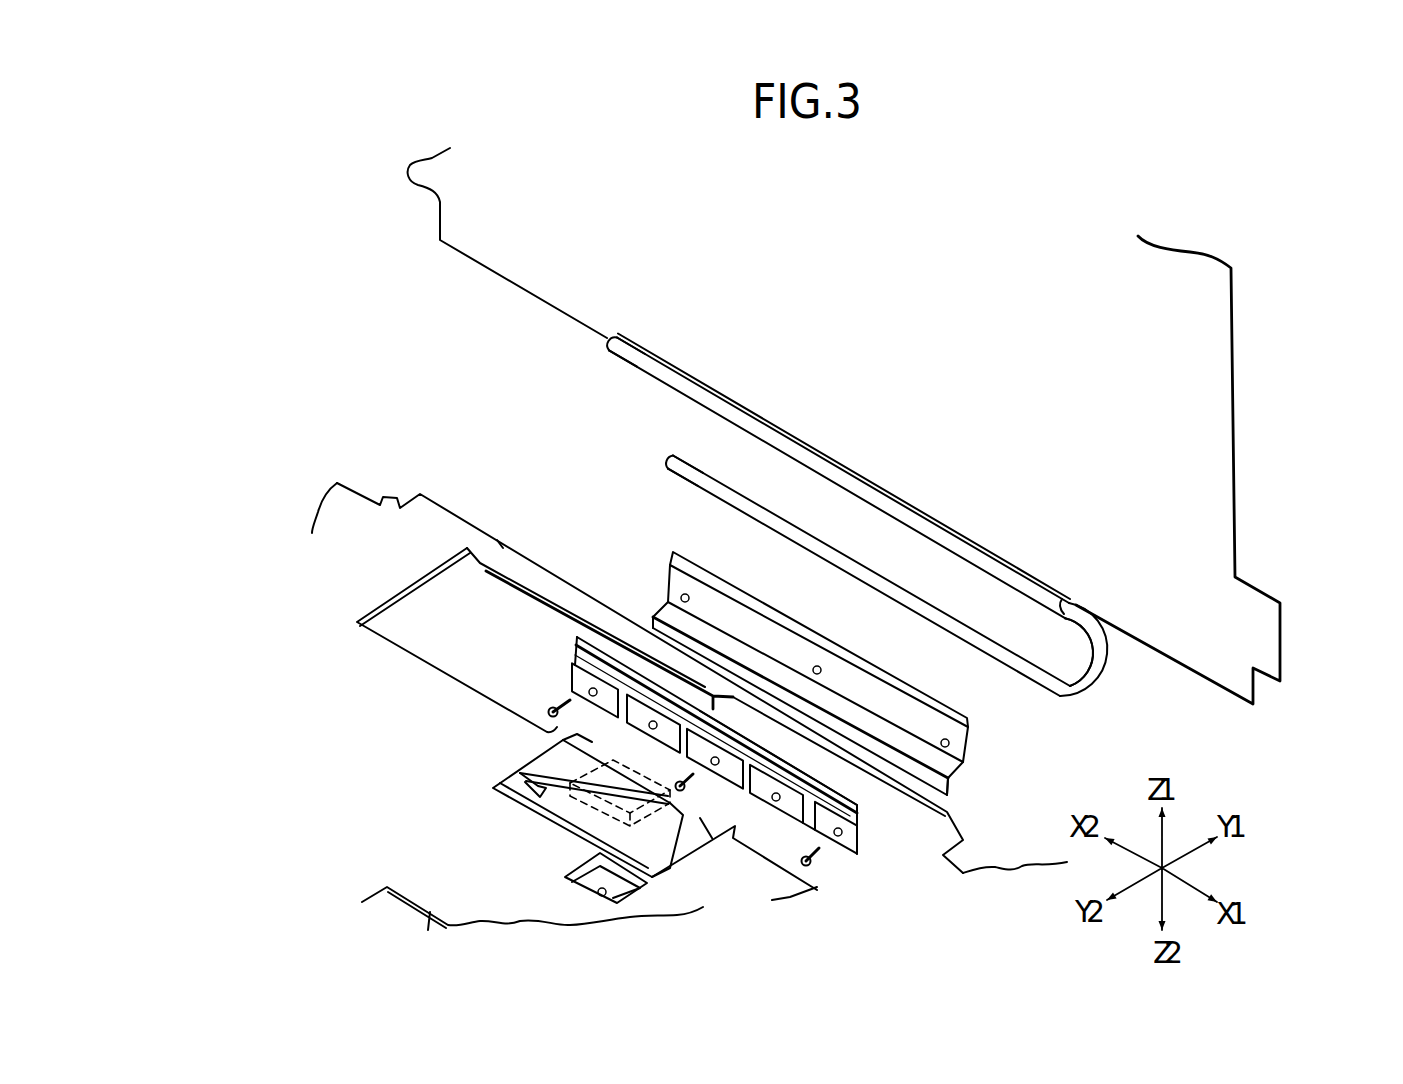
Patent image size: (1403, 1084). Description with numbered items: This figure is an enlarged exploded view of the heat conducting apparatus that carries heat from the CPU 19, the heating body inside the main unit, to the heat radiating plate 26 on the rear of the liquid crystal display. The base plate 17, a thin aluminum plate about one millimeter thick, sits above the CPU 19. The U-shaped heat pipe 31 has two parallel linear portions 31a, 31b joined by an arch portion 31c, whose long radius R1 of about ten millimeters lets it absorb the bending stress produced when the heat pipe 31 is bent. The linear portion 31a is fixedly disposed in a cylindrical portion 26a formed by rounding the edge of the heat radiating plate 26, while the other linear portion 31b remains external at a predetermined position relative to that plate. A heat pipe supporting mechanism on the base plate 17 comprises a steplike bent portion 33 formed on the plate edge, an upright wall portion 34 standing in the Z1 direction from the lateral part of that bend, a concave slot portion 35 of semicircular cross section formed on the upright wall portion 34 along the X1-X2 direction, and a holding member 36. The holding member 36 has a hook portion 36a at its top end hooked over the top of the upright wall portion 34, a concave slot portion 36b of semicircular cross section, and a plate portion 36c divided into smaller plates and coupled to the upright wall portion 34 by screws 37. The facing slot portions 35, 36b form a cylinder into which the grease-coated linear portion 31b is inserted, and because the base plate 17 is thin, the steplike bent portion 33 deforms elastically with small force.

The base plate 17 is at (447, 513).
The CPU 19 is at (570, 818).
The heat radiating plate 26 is at (1220, 462).
The cylindrical portion 26a is at (918, 508).
The heat pipe 31 is at (888, 501).
The linear portion 31a is at (612, 336).
The linear portion 31b is at (698, 496).
The arch portion 31c is at (1108, 660).
The long radius R1 is at (1082, 653).
The steplike bent portion 33 is at (958, 780).
The upright wall portion 34 is at (967, 742).
The concave slot portion 35 is at (928, 713).
The holding member 36 is at (758, 788).
The hook portion 36a is at (863, 803).
The concave slot portion 36b is at (861, 808).
The plate portion 36c is at (827, 830).
The screws 37 is at (797, 866).